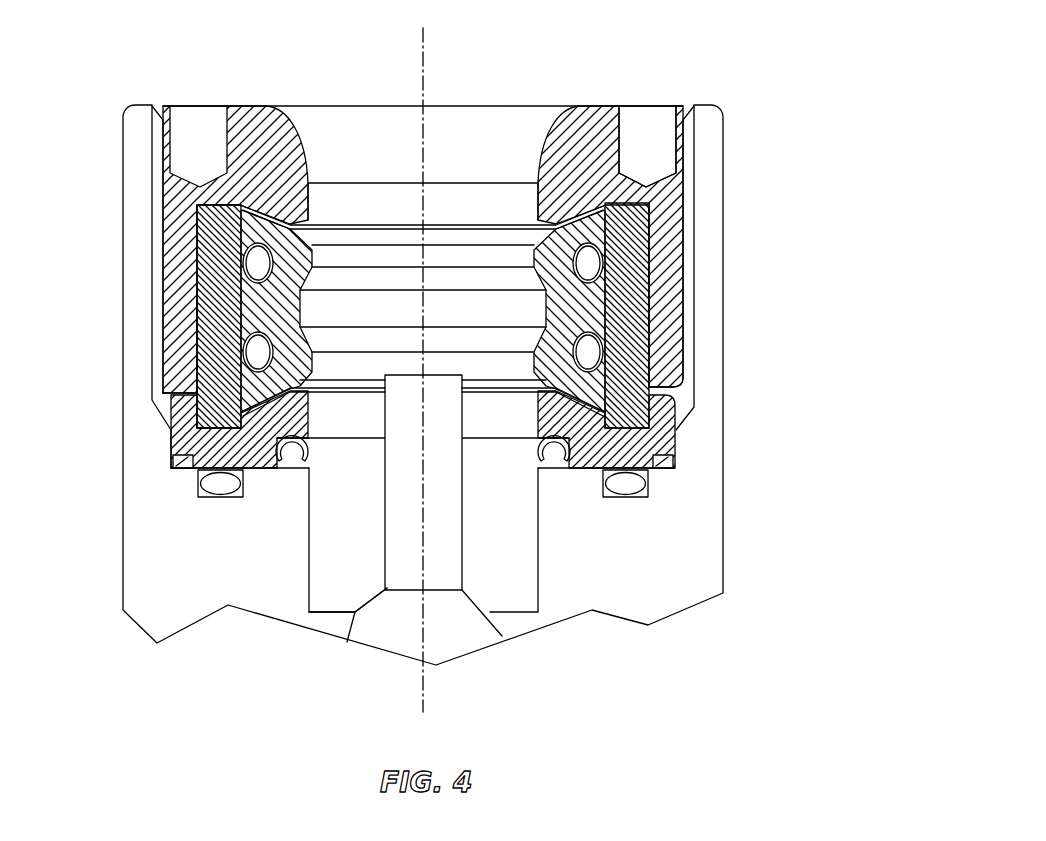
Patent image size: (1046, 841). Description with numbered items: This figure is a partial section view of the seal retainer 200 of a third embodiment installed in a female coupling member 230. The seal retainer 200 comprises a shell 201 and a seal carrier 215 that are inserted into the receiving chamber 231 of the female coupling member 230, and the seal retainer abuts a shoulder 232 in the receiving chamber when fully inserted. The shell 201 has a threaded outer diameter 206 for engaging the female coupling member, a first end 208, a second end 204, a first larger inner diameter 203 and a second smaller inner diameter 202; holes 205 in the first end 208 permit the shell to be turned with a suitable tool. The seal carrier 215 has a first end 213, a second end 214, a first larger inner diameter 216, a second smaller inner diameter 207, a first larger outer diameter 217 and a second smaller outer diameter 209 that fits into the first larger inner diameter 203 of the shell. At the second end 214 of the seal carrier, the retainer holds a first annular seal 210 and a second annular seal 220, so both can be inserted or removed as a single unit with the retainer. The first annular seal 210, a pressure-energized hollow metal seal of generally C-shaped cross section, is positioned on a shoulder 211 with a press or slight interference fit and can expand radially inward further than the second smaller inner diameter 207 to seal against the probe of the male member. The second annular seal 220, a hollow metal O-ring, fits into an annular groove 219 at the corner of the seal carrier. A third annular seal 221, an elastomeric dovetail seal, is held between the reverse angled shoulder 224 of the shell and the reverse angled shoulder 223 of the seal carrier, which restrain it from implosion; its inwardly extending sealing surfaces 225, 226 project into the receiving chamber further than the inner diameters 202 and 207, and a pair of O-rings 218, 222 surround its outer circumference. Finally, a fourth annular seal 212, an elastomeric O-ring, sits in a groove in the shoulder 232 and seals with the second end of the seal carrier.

The seal retainer 200 is at (637, 45).
The shell 201 is at (553, 148).
The second smaller inner diameter 202 is at (538, 218).
The first larger inner diameter 203 is at (645, 283).
The second end 204 is at (678, 398).
The holes 205 is at (650, 117).
The threaded outer diameter 206 is at (687, 297).
The second smaller inner diameter 207 is at (539, 410).
The first end 208 is at (600, 106).
The second smaller outer diameter 209 is at (655, 240).
The first annular seal 210 is at (557, 462).
The shoulder 211 is at (307, 457).
The fourth annular seal 212 is at (640, 484).
The first end 213 is at (207, 190).
The second end 214 is at (252, 482).
The seal carrier 215 is at (637, 358).
The first larger inner diameter 216 is at (240, 383).
The first larger outer diameter 217 is at (170, 443).
The O-ring 218 is at (225, 243).
The annular groove 219 is at (178, 470).
The second annular seal 220 is at (172, 465).
The third annular seal 221 is at (255, 350).
The O-ring 222 is at (200, 343).
The reverse angled shoulder 223 is at (172, 395).
The reverse angled shoulder 224 is at (255, 263).
The sealing surface 225 is at (322, 240).
The sealing surface 226 is at (322, 343).
The female coupling member 230 is at (720, 556).
The receiving chamber 231 is at (343, 602).
The shoulder 232 is at (262, 470).